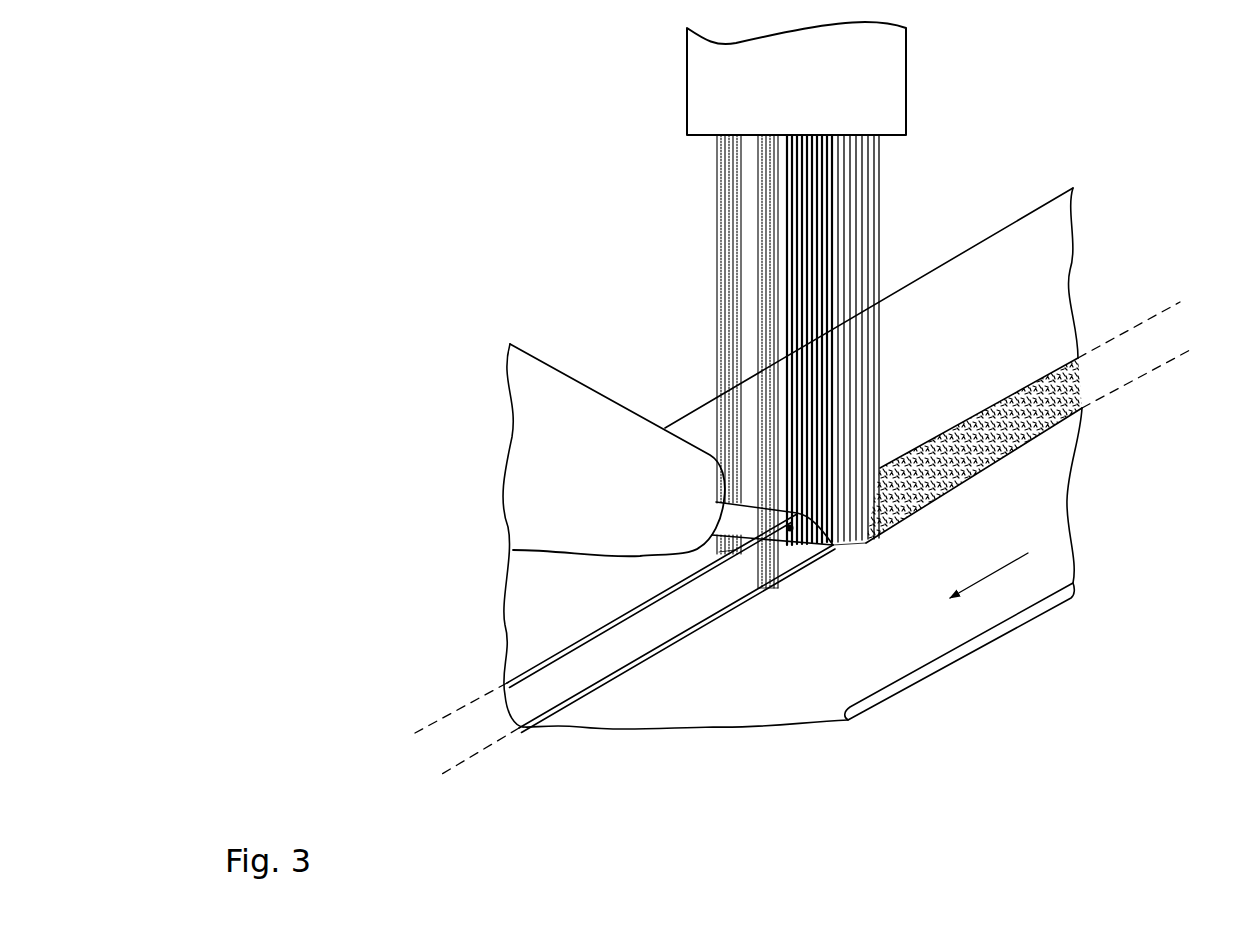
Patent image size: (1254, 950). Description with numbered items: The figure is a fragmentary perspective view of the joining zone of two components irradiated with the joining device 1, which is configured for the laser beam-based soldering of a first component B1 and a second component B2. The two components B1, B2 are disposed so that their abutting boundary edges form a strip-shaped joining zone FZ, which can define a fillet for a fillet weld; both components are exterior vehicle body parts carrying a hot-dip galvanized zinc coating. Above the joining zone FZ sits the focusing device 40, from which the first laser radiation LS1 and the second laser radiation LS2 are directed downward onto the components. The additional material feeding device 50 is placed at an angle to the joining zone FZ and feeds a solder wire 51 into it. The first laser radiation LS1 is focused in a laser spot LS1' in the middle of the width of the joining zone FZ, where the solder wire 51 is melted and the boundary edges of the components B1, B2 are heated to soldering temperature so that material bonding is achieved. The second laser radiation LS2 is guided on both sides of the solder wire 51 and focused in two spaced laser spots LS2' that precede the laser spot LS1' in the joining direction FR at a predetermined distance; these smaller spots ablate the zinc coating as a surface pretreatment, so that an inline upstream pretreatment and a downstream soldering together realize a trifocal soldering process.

The joining device 1 is at (515, 153).
The focusing device 40 is at (907, 88).
The additional material feeding device 50 is at (582, 376).
The solder wire 51 is at (792, 531).
The first laser radiation LS1 is at (900, 332).
The second laser radiation LS2 is at (698, 361).
The laser spot of the first laser radiation LS1' is at (931, 668).
The laser spots of the second laser radiation LS2' is at (690, 672).
The first component B1 is at (1043, 205).
The second component B2 is at (1065, 545).
The joining zone FZ is at (798, 543).
The joining direction FR is at (966, 584).